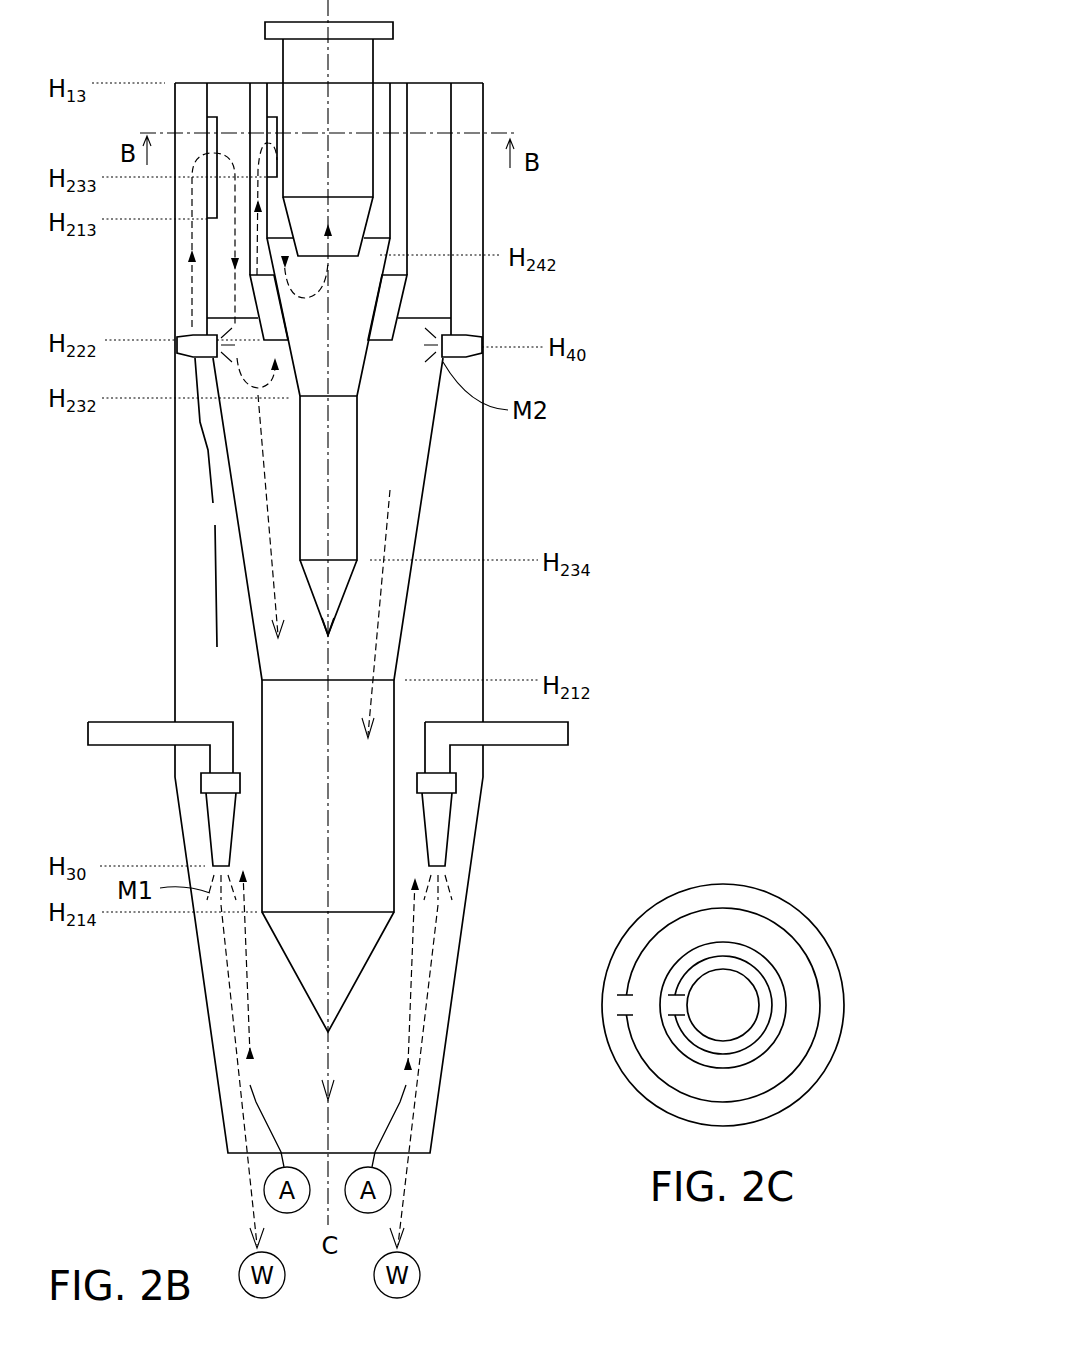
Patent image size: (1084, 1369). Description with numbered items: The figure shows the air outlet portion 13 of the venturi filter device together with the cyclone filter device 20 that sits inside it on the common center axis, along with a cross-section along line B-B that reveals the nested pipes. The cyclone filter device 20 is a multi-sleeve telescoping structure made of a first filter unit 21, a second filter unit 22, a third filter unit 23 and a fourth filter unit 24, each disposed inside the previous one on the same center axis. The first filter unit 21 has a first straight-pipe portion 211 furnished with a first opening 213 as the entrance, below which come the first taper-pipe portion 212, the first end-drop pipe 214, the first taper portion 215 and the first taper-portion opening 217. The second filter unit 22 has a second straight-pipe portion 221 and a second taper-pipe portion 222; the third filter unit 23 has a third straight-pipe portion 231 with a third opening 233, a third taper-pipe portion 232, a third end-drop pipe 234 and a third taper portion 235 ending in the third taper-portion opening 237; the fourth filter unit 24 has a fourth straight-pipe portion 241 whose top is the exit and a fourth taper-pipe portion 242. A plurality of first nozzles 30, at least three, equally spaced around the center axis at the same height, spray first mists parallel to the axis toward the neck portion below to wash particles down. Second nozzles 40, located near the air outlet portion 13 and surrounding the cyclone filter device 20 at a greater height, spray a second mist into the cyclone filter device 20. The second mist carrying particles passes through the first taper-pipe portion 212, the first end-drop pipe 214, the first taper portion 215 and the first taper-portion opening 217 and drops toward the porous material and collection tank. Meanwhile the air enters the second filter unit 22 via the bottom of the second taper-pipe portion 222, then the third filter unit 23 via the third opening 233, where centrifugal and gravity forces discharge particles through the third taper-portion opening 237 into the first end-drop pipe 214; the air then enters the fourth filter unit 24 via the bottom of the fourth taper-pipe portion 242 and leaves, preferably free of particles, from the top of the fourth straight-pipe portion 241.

In FIG. 2B, the air outlet portion 13 is at (175, 640).
In FIG. 2B, the cyclone filter device 20 is at (434, 485).
In FIG. 2C, the cyclone filter device 20 is at (856, 832).
In FIG. 2B, the first filter unit 21 is at (205, 100).
In FIG. 2C, the first filter unit 21 is at (642, 937).
In FIG. 2B, the second filter unit 22 is at (580, 210).
In FIG. 2C, the second filter unit 22 is at (692, 941).
In FIG. 2B, the third filter unit 23 is at (396, 107).
In FIG. 2C, the third filter unit 23 is at (753, 958).
In FIG. 2C, the fourth filter unit 24 is at (764, 1003).
In FIG. 2B, the first nozzle 30 is at (217, 822).
In FIG. 2B, the second nozzle 40 is at (460, 352).
In FIG. 2B, the upper cylindrical portion of first body 211 is at (207, 240).
In FIG. 2B, the first taper-pipe portion 212 is at (232, 505).
In FIG. 2B, the opening of first body 213 is at (213, 125).
In FIG. 2C, the opening of first body 213 is at (612, 1002).
In FIG. 2B, the first end-drop pipe 214 is at (275, 710).
In FIG. 2B, the first taper portion 215 is at (292, 968).
In FIG. 2B, the first taper-portion opening 217 is at (330, 1032).
In FIG. 2B, the cylindrical portion of second body 221 is at (408, 228).
In FIG. 2B, the second taper-pipe portion 222 is at (406, 295).
In FIG. 2B, the upper cylindrical portion of third body 231 is at (392, 190).
In FIG. 2B, the conical portion of third body 232 is at (366, 355).
In FIG. 2B, the third opening 233 is at (270, 125).
In FIG. 2C, the third opening 233 is at (668, 1005).
In FIG. 2B, the third end-drop pipe 234 is at (360, 488).
In FIG. 2B, the third taper portion 235 is at (347, 593).
In FIG. 2B, the third taper-portion opening 237 is at (330, 635).
In FIG. 2B, the fourth straight-pipe portion 241 is at (373, 60).
In FIG. 2B, the fourth taper-pipe portion 242 is at (340, 256).